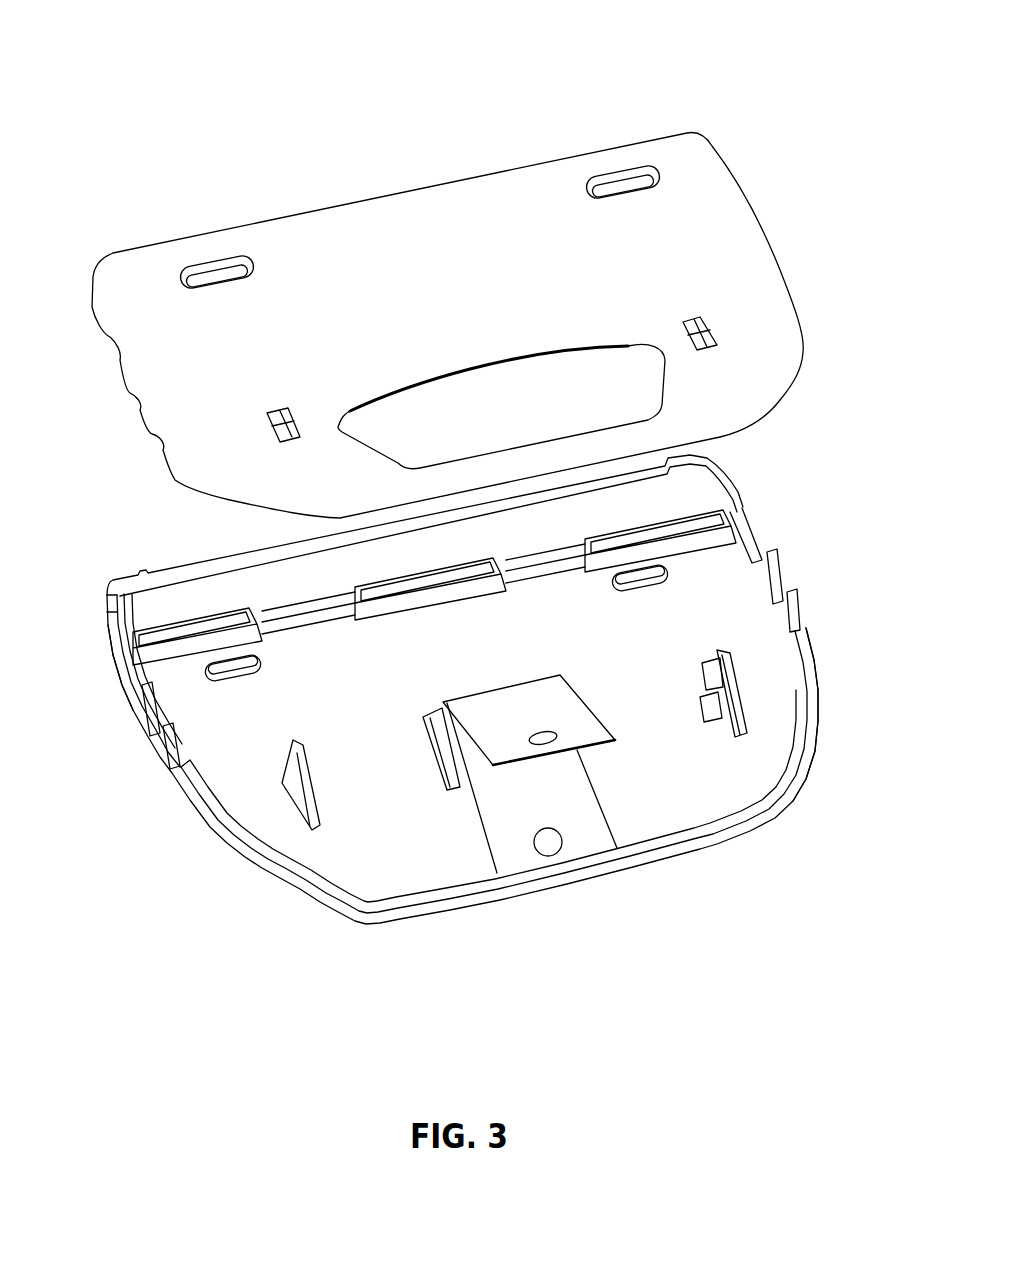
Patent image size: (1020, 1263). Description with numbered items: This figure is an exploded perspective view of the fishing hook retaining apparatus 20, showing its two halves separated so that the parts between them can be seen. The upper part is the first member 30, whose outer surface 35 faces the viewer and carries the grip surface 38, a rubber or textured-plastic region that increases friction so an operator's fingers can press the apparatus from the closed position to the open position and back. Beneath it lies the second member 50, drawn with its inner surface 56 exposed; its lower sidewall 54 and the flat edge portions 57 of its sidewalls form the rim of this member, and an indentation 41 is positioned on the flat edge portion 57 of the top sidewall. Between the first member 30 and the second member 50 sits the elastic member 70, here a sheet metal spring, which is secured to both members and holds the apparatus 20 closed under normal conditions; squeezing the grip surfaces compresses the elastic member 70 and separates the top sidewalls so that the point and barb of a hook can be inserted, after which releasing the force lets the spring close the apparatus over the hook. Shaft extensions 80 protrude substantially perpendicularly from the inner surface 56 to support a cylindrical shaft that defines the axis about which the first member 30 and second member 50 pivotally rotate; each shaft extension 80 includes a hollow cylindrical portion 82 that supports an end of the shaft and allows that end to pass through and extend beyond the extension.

The fishing hook retaining apparatus 20 is at (205, 146).
The first member 30 is at (791, 212).
The outer surface 35 is at (350, 317).
The grip surface 38 is at (493, 407).
The indentation 41 is at (240, 563).
The second member 50 is at (795, 523).
The lower sidewall 54 is at (708, 843).
The inner surface 56 is at (388, 768).
The flat edge portion 57 is at (113, 613).
The elastic member 70 is at (563, 807).
The shaft extensions 80 is at (290, 785).
The hollow cylindrical portion 82 is at (707, 667).